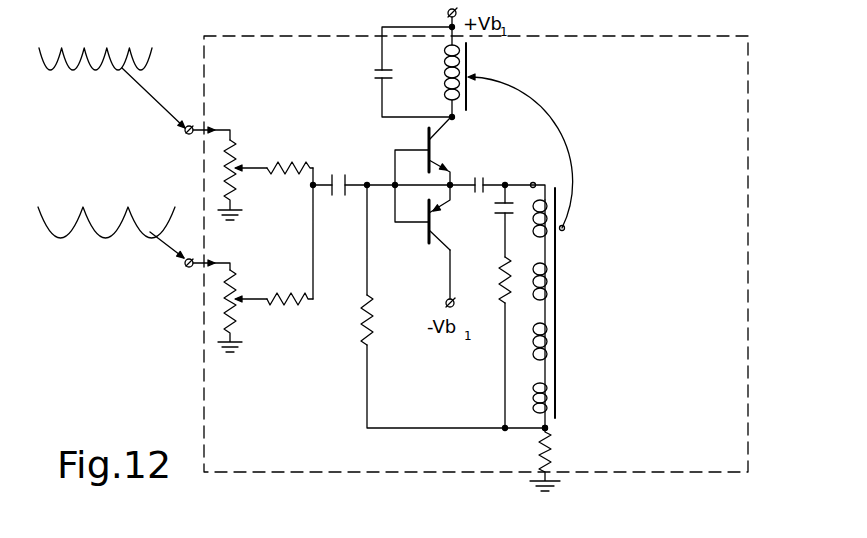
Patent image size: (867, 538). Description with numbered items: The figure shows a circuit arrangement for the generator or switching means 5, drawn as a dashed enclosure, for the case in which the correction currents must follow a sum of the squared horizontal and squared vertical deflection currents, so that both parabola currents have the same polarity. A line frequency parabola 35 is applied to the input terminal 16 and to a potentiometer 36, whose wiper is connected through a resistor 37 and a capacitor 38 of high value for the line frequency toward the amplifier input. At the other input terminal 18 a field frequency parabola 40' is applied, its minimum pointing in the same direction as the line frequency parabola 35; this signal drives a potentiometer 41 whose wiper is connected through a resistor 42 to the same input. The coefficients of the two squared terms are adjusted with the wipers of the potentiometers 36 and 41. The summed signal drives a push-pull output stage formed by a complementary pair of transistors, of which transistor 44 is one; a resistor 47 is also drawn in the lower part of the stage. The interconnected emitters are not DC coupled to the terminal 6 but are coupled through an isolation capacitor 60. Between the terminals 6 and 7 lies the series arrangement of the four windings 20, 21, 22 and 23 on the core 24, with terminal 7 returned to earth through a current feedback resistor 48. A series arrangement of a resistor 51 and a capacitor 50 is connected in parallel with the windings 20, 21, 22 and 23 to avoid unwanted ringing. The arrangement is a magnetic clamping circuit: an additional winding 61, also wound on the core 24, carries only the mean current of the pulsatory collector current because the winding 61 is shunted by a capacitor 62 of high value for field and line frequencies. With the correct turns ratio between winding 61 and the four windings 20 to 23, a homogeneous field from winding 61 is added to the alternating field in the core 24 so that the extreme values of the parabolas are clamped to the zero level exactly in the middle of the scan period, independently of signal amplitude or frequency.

The switching means 5 is at (715, 472).
The terminal 6 is at (537, 186).
The terminal 7 is at (550, 428).
The input terminal 16 is at (194, 126).
The input terminal 18 is at (193, 259).
The winding 20 is at (532, 208).
The winding 21 is at (533, 282).
The winding 22 is at (532, 347).
The winding 23 is at (533, 388).
The core 24 is at (468, 60).
The parabola signal of line frequency 35 is at (108, 52).
The potentiometer 36 is at (224, 165).
The resistor 37 is at (287, 158).
The capacitor 38 is at (340, 173).
The field frequency parabola 40' is at (111, 245).
The potentiometer 41 is at (238, 318).
The resistor 42 is at (281, 292).
The transistor 44 is at (441, 220).
The resistor 47 is at (373, 314).
The current feedback resistor 48 is at (553, 452).
The capacitor 50 is at (528, 183).
The resistor 51 is at (498, 287).
The isolation capacitor 60 is at (480, 178).
The additional winding 61 is at (444, 75).
The capacitor 62 is at (372, 75).